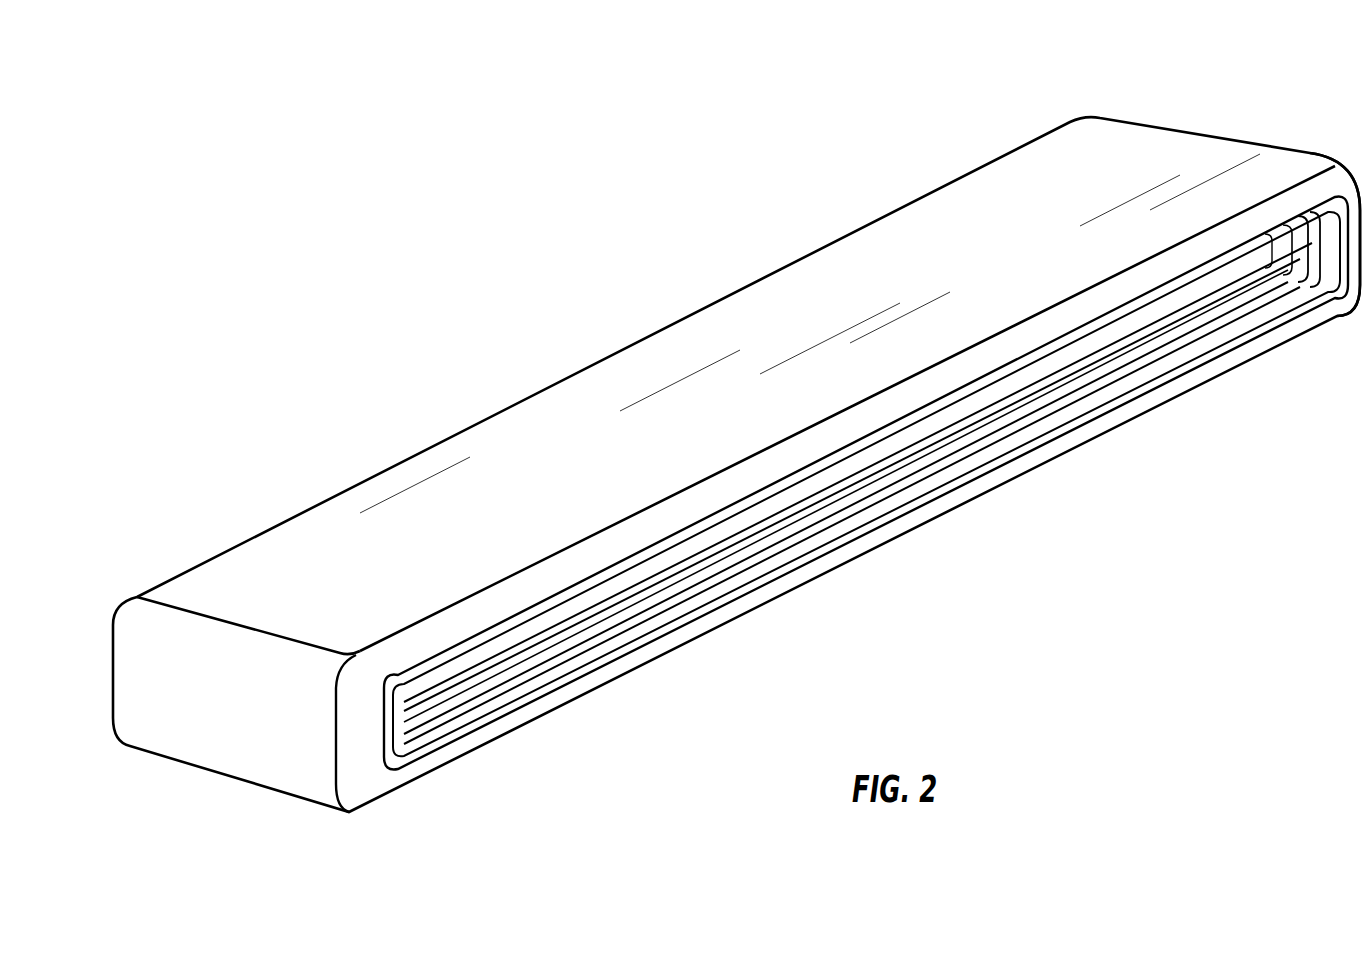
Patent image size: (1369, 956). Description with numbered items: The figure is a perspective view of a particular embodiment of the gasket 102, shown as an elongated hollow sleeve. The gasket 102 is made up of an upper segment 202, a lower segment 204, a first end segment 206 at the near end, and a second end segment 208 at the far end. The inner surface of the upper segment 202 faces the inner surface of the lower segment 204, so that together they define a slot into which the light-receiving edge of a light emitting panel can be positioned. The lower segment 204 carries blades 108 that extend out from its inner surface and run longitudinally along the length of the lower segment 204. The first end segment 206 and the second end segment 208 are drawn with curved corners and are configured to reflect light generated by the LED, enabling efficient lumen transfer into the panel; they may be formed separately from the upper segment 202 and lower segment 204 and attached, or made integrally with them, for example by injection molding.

The gasket 102 is at (662, 225).
The blades 108 is at (1082, 373).
The upper segment 202 is at (356, 490).
The lower segment 204 is at (960, 563).
The first end segment 206 is at (157, 732).
The second end segment 208 is at (1228, 140).